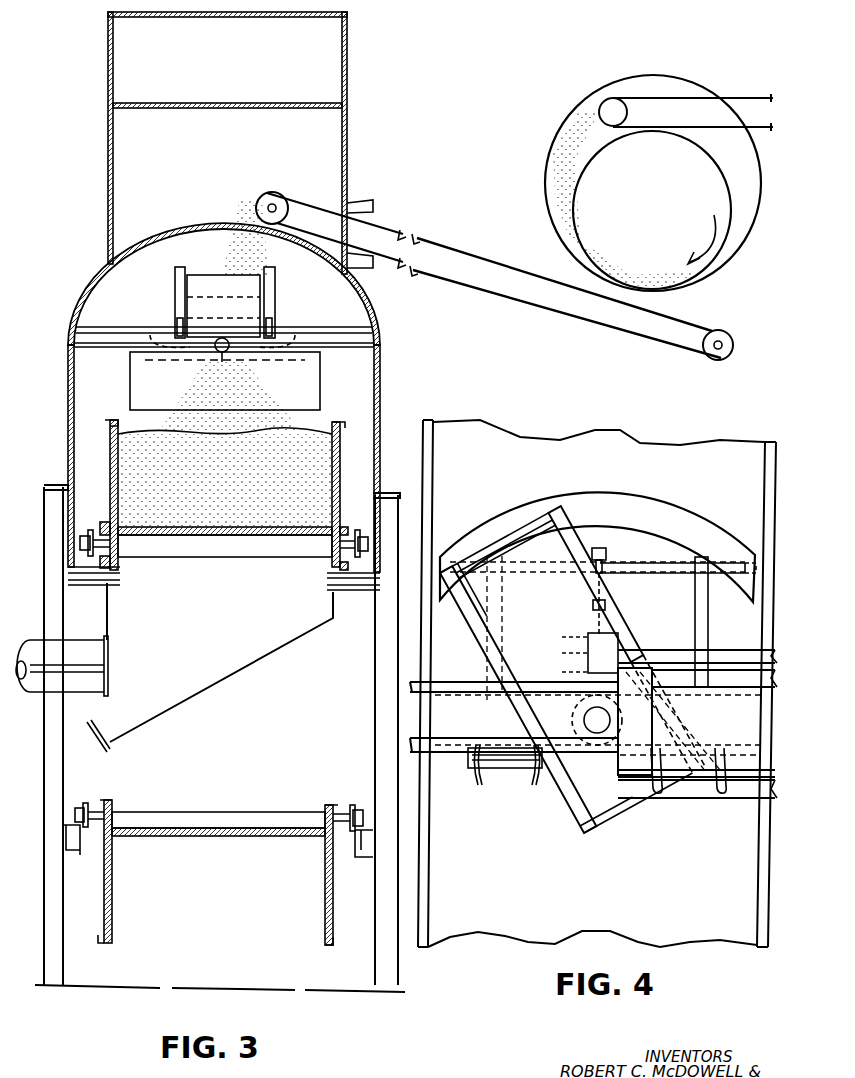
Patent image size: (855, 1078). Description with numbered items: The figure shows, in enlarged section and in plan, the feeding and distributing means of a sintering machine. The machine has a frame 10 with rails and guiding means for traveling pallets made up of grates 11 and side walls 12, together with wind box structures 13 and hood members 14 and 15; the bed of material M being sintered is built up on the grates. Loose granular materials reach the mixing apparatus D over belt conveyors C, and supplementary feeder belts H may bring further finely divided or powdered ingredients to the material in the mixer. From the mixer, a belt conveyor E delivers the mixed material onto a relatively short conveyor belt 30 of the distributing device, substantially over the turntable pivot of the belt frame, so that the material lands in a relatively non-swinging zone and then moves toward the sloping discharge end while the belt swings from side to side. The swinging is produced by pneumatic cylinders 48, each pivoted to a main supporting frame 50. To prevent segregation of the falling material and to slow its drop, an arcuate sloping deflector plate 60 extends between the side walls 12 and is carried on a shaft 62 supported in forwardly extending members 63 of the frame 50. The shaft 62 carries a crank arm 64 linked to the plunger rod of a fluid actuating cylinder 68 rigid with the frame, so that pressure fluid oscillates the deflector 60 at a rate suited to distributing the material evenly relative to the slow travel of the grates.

In FIG. 3, the frame 10 is at (44, 790).
In FIG. 3, the grates 11 is at (226, 560).
In FIG. 3, the side walls 12 is at (108, 492).
In FIG. 4, the side walls 12 is at (432, 458).
In FIG. 3, the wind box structures 13 is at (238, 662).
In FIG. 3, the hood member 14 is at (68, 400).
In FIG. 3, the hood member 15 is at (108, 154).
In FIG. 3, the conveyor belt 30 is at (197, 305).
In FIG. 4, the conveyor belt 30 is at (597, 669).
In FIG. 4, the pneumatic cylinders 48 is at (492, 768).
In FIG. 4, the main supporting frame 50 is at (448, 692).
In FIG. 3, the deflector plate 60 is at (320, 386).
In FIG. 4, the deflector plate 60 is at (620, 500).
In FIG. 4, the shaft 62 is at (643, 575).
In FIG. 4, the forwardly extending members 63 is at (705, 612).
In FIG. 4, the crank arm 64 is at (590, 548).
In FIG. 4, the fluid actuating cylinder 68 is at (586, 661).
In FIG. 3, the belt conveyors C is at (331, 230).
In FIG. 4, the belt conveyors C is at (470, 290).
In FIG. 4, the mixing apparatus D is at (548, 158).
In FIG. 4, the belt conveyors E is at (745, 777).
In FIG. 4, the supplementary feeder belts H is at (762, 98).
In FIG. 3, the bed of material M is at (188, 516).
In FIG. 4, the bed of material M is at (605, 444).